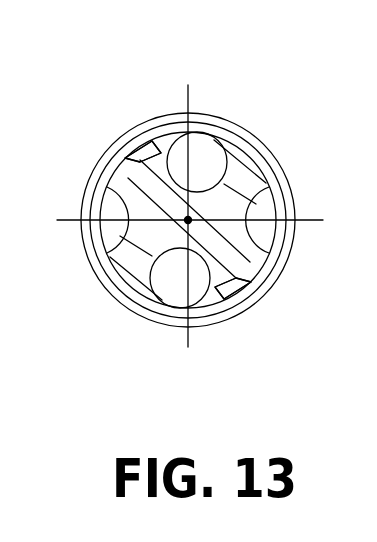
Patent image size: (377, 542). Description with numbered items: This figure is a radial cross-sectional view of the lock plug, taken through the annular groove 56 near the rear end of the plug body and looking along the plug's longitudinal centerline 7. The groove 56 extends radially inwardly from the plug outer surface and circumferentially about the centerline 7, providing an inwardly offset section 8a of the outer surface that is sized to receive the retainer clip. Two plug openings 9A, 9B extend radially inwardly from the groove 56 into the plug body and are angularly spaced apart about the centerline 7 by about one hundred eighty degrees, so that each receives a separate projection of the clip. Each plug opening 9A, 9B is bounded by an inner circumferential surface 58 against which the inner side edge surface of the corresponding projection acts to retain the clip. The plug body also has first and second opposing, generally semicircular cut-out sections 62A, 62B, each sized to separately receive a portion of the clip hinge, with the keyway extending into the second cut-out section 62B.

The longitudinal centerline 7 is at (188, 220).
The inwardly offset section 8a is at (256, 152).
The plug opening 9A is at (140, 130).
The plug opening 9B is at (246, 309).
The annular groove 56 is at (137, 293).
The inner circumferential surface 58 is at (128, 148).
The first cut-out section 62A is at (268, 192).
The second cut-out section 62B is at (127, 242).